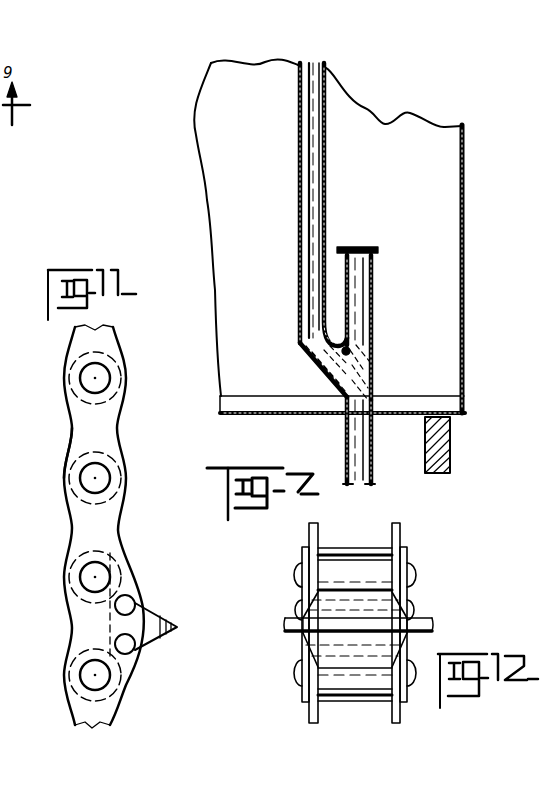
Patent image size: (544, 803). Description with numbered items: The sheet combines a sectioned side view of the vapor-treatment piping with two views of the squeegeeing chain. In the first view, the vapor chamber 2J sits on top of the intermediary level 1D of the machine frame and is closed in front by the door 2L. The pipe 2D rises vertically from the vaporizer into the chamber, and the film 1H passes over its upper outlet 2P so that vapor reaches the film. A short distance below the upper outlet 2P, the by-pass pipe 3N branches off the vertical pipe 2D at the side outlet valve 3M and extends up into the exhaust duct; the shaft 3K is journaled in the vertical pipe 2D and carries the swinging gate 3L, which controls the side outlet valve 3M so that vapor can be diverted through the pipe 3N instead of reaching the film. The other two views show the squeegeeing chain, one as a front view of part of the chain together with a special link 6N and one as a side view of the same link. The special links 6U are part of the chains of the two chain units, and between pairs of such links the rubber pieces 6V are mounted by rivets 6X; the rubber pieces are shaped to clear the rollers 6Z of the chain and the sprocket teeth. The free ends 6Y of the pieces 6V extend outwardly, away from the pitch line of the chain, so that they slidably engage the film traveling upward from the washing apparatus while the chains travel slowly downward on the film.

In FIG. 7, the vapor chamber 2J is at (329, 236).
In FIG. 7, the door 2L is at (465, 292).
In FIG. 7, the film 1H is at (360, 247).
In FIG. 7, the upper outlet 2P is at (375, 268).
In FIG. 7, the pipe 3N is at (300, 321).
In FIG. 7, the side outlet valve 3M is at (333, 353).
In FIG. 7, the shaft 3K is at (351, 352).
In FIG. 7, the swinging gate 3L is at (345, 372).
In FIG. 7, the pipe 2D is at (374, 455).
In FIG. 7, the intermediary level 1D is at (451, 453).
In FIG. 11, the chain link 6N is at (80, 420).
In FIG. 11, the special links 6U is at (82, 613).
In FIG. 12, the special links 6U is at (407, 555).
In FIG. 11, the rollers 6Z is at (108, 561).
In FIG. 12, the rollers 6Z is at (350, 559).
In FIG. 11, the rivets 6X is at (131, 598).
In FIG. 12, the rivets 6X is at (300, 645).
In FIG. 11, the rubber pieces 6V is at (148, 614).
In FIG. 12, the rubber pieces 6V is at (393, 604).
In FIG. 11, the free ends 6Y is at (184, 630).
In FIG. 12, the free ends 6Y is at (433, 629).